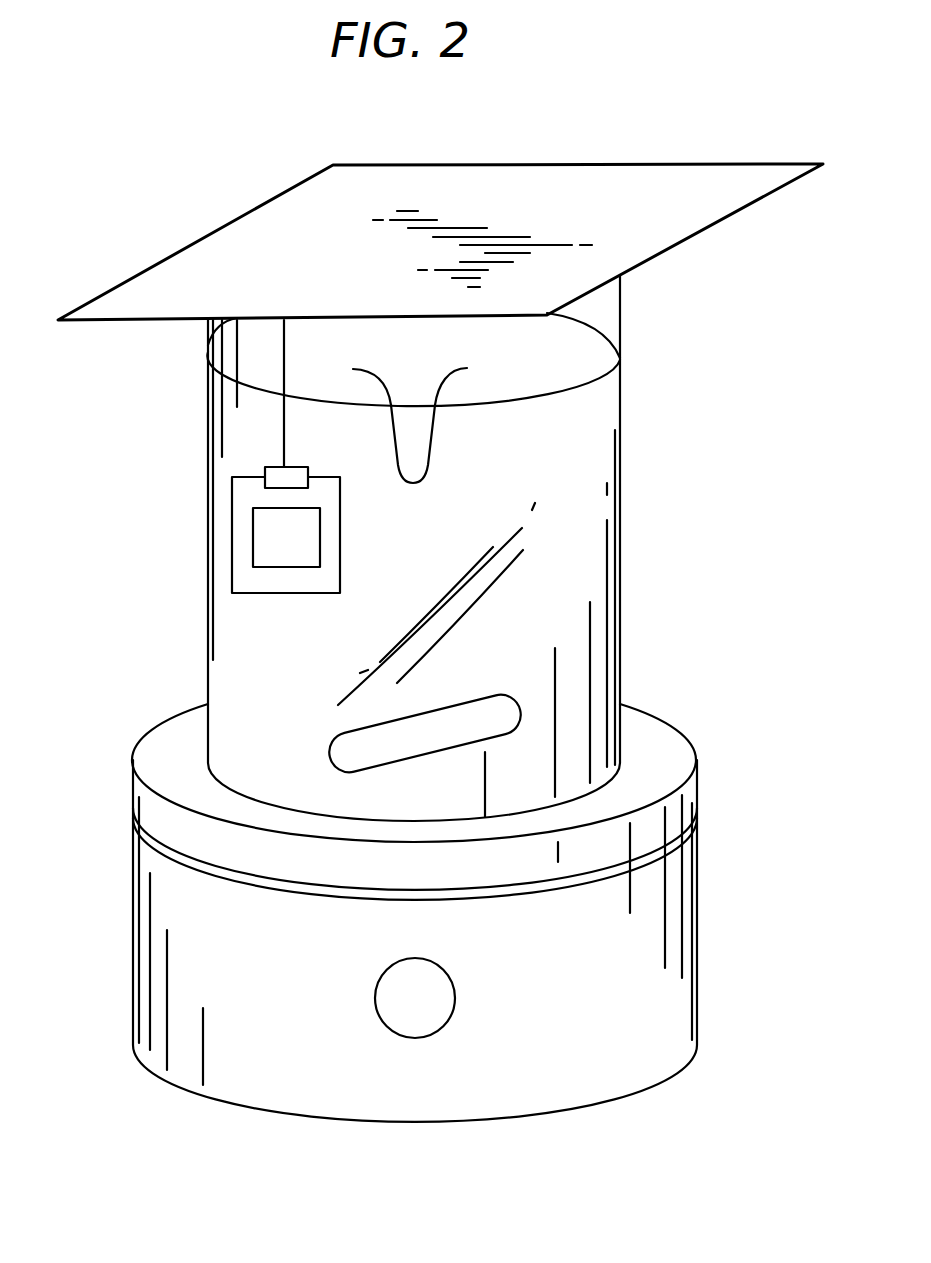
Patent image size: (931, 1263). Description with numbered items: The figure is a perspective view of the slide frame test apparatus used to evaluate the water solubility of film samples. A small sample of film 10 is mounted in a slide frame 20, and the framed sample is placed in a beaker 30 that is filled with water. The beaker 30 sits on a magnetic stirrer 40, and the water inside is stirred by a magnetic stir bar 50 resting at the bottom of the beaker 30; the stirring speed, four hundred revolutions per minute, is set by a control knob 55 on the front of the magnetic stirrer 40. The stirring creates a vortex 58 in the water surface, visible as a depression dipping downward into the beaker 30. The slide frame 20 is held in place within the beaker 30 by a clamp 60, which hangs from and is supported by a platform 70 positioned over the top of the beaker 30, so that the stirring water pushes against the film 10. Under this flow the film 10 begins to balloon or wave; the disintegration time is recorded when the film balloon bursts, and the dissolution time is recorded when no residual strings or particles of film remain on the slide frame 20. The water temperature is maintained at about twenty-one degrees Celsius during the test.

The film 10 is at (275, 548).
The slide frame 20 is at (247, 493).
The beaker 30 is at (620, 497).
The magnetic stirrer 40 is at (677, 913).
The magnetic stir bar 50 is at (510, 708).
The control knob 55 is at (415, 1008).
The vortex 58 is at (417, 442).
The clamp 60 is at (283, 475).
The platform 70 is at (737, 177).